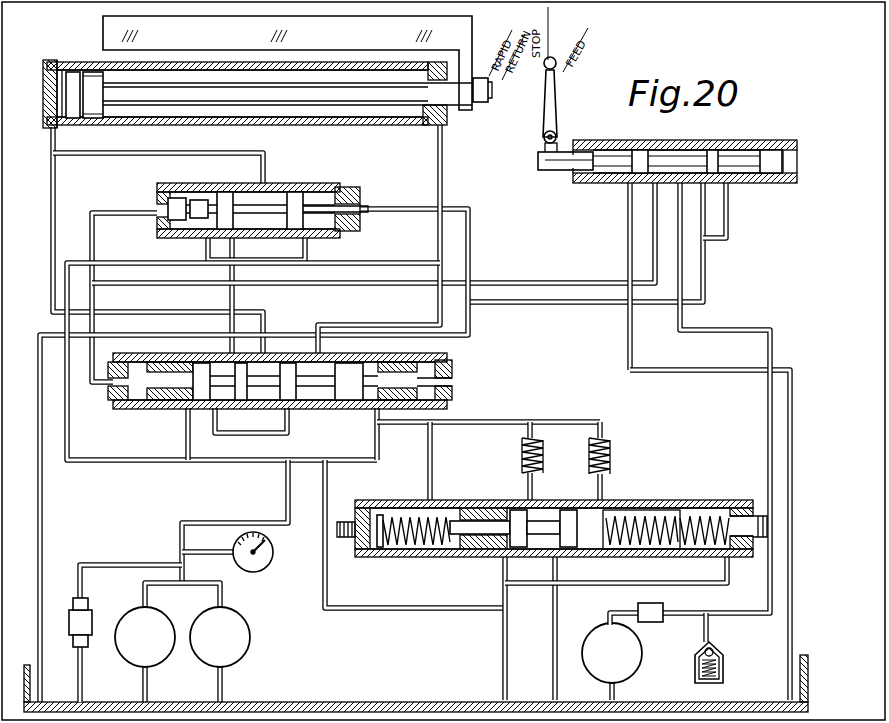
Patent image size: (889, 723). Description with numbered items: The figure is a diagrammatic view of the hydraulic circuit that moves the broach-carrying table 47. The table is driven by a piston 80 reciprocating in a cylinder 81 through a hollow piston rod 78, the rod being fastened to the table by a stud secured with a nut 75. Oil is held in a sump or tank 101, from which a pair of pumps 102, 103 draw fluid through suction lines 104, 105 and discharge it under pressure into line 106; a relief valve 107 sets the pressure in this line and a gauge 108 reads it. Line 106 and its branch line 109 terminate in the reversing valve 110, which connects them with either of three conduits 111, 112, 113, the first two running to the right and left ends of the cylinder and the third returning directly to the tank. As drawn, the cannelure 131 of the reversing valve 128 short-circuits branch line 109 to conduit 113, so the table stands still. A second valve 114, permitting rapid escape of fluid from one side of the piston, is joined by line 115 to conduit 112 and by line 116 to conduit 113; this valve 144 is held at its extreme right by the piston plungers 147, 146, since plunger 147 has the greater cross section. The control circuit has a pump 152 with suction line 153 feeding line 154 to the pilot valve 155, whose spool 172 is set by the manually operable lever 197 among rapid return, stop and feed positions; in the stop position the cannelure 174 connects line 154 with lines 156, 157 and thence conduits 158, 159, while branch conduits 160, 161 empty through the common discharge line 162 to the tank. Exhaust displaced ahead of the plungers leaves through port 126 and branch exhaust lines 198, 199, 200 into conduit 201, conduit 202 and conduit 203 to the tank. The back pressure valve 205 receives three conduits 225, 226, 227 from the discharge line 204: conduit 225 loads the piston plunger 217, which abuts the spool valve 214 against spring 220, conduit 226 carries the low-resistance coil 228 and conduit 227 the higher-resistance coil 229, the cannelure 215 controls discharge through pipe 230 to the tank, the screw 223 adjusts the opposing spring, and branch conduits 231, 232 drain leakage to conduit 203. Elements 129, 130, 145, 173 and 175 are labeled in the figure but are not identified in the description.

The table 47 is at (103, 40).
The nut 75 is at (478, 110).
The hollow piston rod 78 is at (208, 97).
The piston 80 is at (93, 107).
The cylinder 81 is at (350, 118).
The sump or tank 101 is at (633, 712).
The pump 102 is at (125, 655).
The pump 103 is at (238, 655).
The suction line 104 is at (150, 684).
The suction line 105 is at (225, 684).
The line 106 is at (228, 522).
The pressure control or relief valve 107 is at (93, 620).
The gauge 108 is at (268, 560).
The branch line 109 is at (222, 434).
The directional control or reversing valve 110 is at (397, 353).
The conduit 111 is at (352, 324).
The conduit 112 is at (264, 311).
The conduit 113 is at (230, 341).
The valve 114 is at (302, 187).
The line 115 is at (230, 153).
The line 116 is at (234, 273).
The port 126 is at (441, 385).
The reversing valve 128 is at (348, 362).
The port 129 is at (307, 408).
The valve land 130 is at (280, 360).
The cannelure 131 is at (228, 408).
The valve 144 is at (332, 200).
The pilot valve 145 is at (272, 193).
The piston plunger 146 is at (361, 192).
The piston plunger 147 is at (203, 208).
The pump 152 is at (641, 653).
The suction line 153 is at (620, 690).
The line 154 is at (623, 605).
The pilot valve 155 is at (735, 148).
The line 156 is at (656, 210).
The line 157 is at (700, 207).
The conduit 158 is at (95, 276).
The conduit 159 is at (473, 250).
The branch conduit 160 is at (730, 204).
The branch conduit 161 is at (628, 205).
The common discharge line 162 is at (700, 371).
The pilot valve 172 is at (568, 168).
The valve land 173 is at (720, 148).
The cannelure 174 is at (677, 153).
The valve land 175 is at (612, 152).
The manually operable lever 197 is at (556, 120).
The branch exhaust line 198 is at (380, 442).
The branch exhaust line 199 is at (183, 424).
The branch exhaust line 200 is at (210, 250).
The conduit 201 is at (108, 467).
The conduit 202 is at (388, 607).
The conduit 203 is at (503, 634).
The line 204 is at (480, 421).
The back pressure valve 205 is at (674, 500).
The spool type valve 214 is at (514, 517).
The cannelure 215 is at (562, 500).
The piston plunger 217 is at (473, 520).
The spring 220 is at (415, 545).
The screw 223 is at (714, 504).
The conduit 225 is at (433, 458).
The conduit 226 is at (527, 431).
The conduit 227 is at (603, 426).
The coil 228 is at (521, 460).
The coil 229 is at (612, 460).
The discharge pipe 230 is at (553, 614).
The branch conduit 231 is at (502, 572).
The branch conduit 232 is at (696, 584).